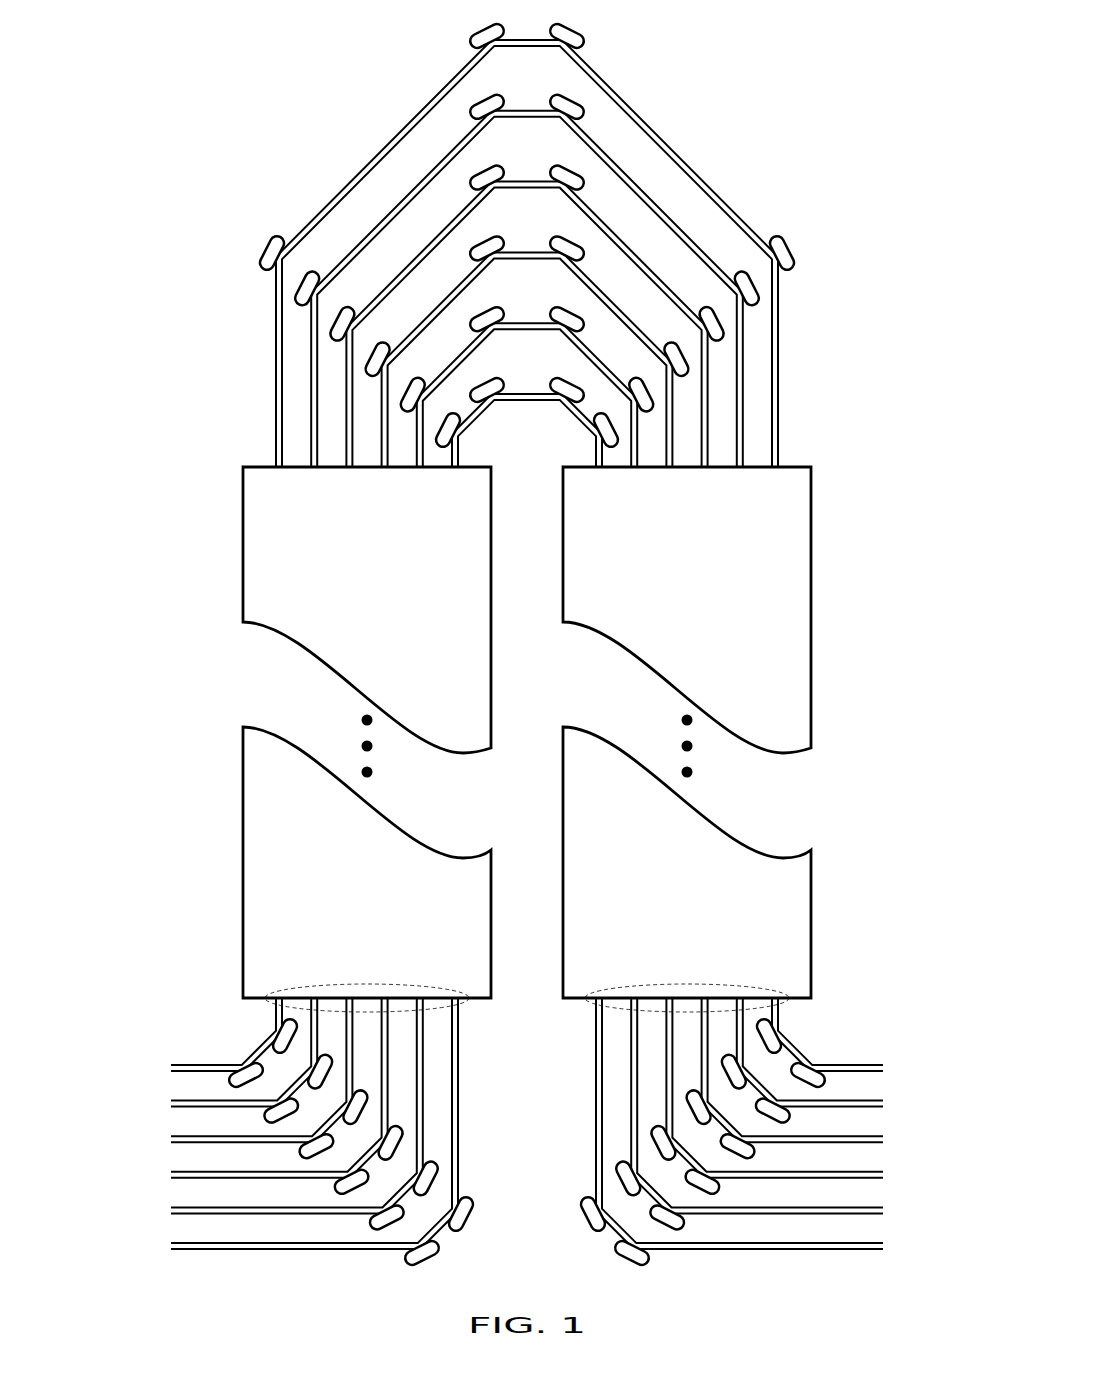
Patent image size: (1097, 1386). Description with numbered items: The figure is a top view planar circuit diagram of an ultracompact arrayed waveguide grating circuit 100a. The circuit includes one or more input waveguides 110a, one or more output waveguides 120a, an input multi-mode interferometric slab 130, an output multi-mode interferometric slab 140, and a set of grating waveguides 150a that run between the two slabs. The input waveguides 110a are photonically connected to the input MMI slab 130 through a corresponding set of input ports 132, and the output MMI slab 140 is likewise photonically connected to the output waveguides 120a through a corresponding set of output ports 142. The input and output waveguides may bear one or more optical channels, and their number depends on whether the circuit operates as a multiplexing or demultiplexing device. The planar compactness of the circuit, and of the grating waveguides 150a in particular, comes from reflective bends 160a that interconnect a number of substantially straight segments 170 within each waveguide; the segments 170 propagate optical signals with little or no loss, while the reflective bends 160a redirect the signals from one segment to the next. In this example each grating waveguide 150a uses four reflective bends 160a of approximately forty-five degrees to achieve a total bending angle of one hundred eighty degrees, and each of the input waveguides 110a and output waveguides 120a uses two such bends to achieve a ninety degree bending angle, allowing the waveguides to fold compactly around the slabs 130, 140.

The AWG circuit 100a is at (138, 78).
The input waveguides 110a is at (199, 1026).
The output waveguides 120a is at (838, 1032).
The input MMI slab 130 is at (350, 620).
The input ports 132 is at (457, 1001).
The output MMI slab 140 is at (670, 620).
The output ports 142 is at (597, 1001).
The grating waveguides 150a is at (291, 153).
The reflective bends 160a is at (468, 191).
The segments 170 is at (519, 643).